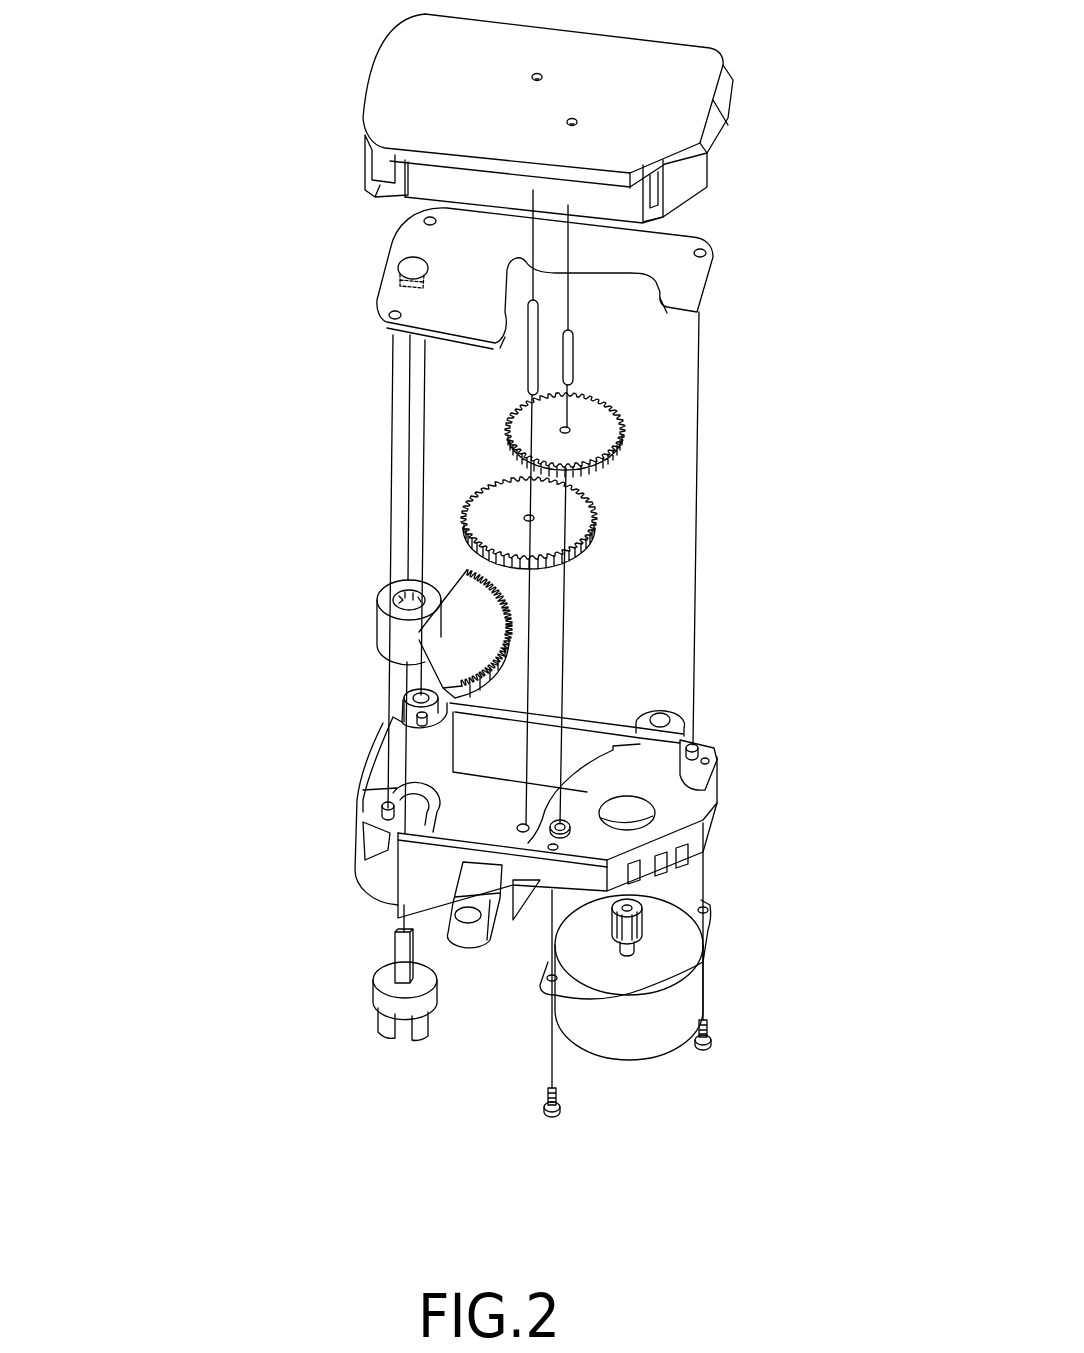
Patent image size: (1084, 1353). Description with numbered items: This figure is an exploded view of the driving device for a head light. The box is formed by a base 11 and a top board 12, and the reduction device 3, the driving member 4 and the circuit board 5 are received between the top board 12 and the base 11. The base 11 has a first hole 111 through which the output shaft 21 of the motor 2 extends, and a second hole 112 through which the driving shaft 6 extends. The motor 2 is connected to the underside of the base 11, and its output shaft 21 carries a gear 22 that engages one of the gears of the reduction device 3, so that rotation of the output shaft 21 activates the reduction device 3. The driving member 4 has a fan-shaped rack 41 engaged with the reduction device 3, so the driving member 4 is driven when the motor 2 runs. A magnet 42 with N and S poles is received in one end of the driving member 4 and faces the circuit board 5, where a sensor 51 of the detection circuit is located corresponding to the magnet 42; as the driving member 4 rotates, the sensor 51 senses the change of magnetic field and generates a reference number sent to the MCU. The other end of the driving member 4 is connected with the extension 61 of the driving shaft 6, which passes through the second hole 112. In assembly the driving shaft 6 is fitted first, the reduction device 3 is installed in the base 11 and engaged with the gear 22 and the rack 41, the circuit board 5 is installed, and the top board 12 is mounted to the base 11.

The motor 2 is at (647, 1018).
The output shaft 21 is at (627, 943).
The gear 22 is at (642, 922).
The reduction device 3 is at (648, 482).
The driving member 4 is at (384, 628).
The fan-shaped rack 41 is at (457, 648).
The magnet 42 is at (401, 592).
The circuit board 5 is at (695, 273).
The sensor 51 is at (397, 287).
The driving shaft 6 is at (387, 1005).
The extension 61 is at (402, 952).
The base 11 is at (383, 875).
The first hole 111 is at (630, 818).
The second hole 112 is at (363, 787).
The top board 12 is at (423, 82).